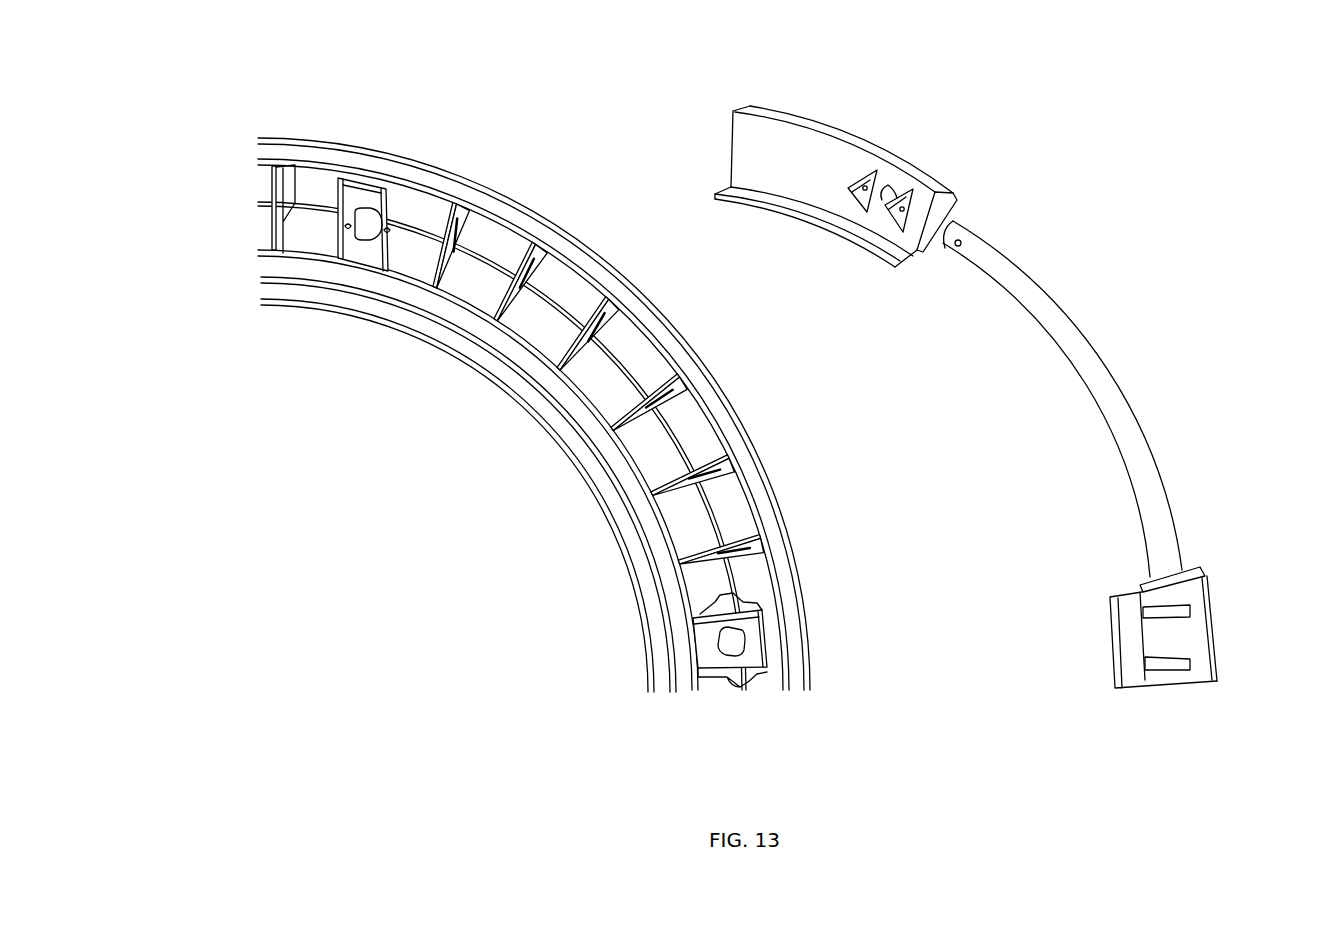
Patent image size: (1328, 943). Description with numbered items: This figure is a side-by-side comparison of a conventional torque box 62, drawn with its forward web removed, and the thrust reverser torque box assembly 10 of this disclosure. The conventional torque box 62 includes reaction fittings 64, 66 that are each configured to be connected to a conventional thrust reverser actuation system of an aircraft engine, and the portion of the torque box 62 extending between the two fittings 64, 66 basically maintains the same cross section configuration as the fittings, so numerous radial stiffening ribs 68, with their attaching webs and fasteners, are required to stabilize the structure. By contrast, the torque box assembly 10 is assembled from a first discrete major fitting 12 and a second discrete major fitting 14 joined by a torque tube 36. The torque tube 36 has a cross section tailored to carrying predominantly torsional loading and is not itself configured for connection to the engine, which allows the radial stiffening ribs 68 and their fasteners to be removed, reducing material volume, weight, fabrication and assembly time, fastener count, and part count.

The thrust reverser torque box assembly 10 is at (992, 369).
The first discrete major fitting 12 is at (802, 158).
The second discrete major fitting 14 is at (1170, 645).
The torque tube 36 is at (1128, 401).
The conventional torque box 62 is at (534, 401).
The reaction fitting 64 is at (370, 195).
The reaction fitting 66 is at (718, 648).
The radial stiffening ribs 68 is at (640, 405).